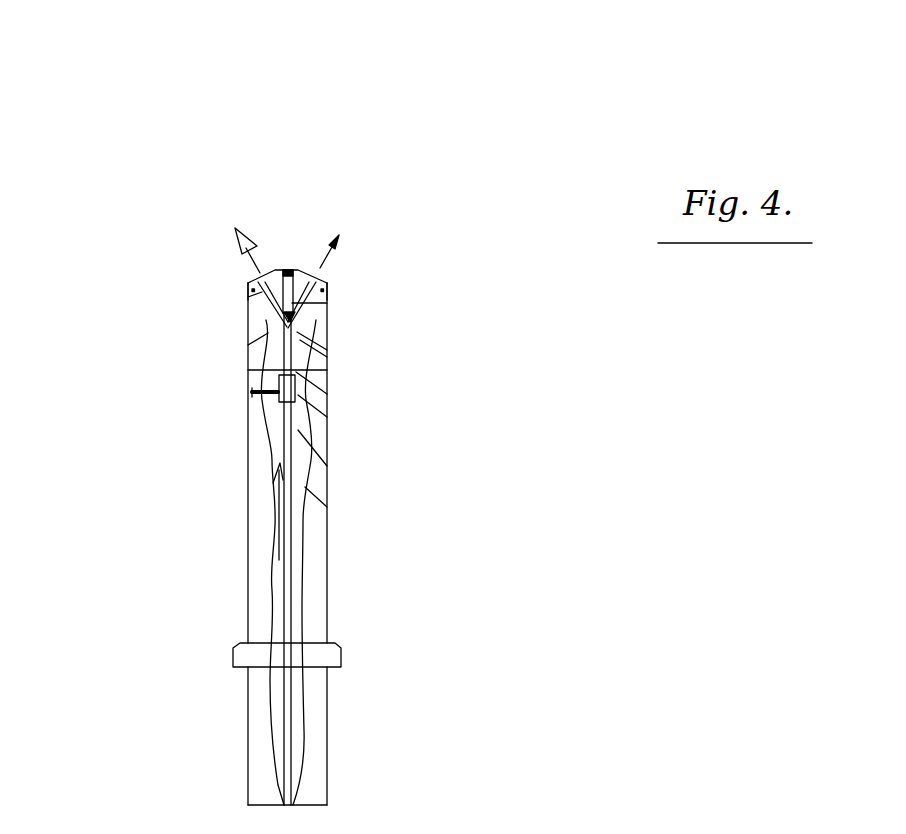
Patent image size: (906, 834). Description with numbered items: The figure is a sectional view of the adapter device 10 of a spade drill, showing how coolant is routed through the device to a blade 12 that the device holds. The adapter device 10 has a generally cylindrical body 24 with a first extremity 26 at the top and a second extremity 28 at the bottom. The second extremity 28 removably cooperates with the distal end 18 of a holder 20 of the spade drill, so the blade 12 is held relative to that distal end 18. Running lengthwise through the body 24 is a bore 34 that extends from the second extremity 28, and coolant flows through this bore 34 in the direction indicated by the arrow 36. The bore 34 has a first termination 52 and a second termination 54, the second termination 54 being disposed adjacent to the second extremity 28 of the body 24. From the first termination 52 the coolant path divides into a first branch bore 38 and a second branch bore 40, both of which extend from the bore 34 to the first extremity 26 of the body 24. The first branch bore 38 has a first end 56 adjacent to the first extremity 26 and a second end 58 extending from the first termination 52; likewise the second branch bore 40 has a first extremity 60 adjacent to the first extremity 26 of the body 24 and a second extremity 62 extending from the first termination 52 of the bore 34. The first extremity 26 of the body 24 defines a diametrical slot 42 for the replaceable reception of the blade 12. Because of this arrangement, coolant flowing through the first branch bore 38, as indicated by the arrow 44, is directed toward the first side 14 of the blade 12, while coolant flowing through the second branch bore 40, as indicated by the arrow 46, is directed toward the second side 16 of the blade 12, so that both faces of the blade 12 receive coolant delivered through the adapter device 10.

The adapter device 10 is at (220, 342).
The blade 12 is at (290, 268).
The first side 14 is at (300, 278).
The second side 16 is at (285, 270).
The distal end 18 is at (249, 388).
The holder 20 is at (313, 575).
The body 24 is at (298, 395).
The first extremity 26 is at (320, 280).
The second extremity 28 is at (305, 487).
The bore 34 is at (296, 372).
The arrow 36 is at (277, 510).
The first branch bore 38 is at (327, 303).
The second branch bore 40 is at (248, 297).
The diametrical slot 42 is at (275, 275).
The arrow 44 is at (313, 277).
The arrow 46 is at (255, 258).
The first termination 52 is at (300, 340).
The second termination 54 is at (298, 430).
The first end 56 is at (313, 277).
The second end 58 is at (297, 332).
The first extremity 60 is at (258, 272).
The second extremity 62 is at (248, 345).